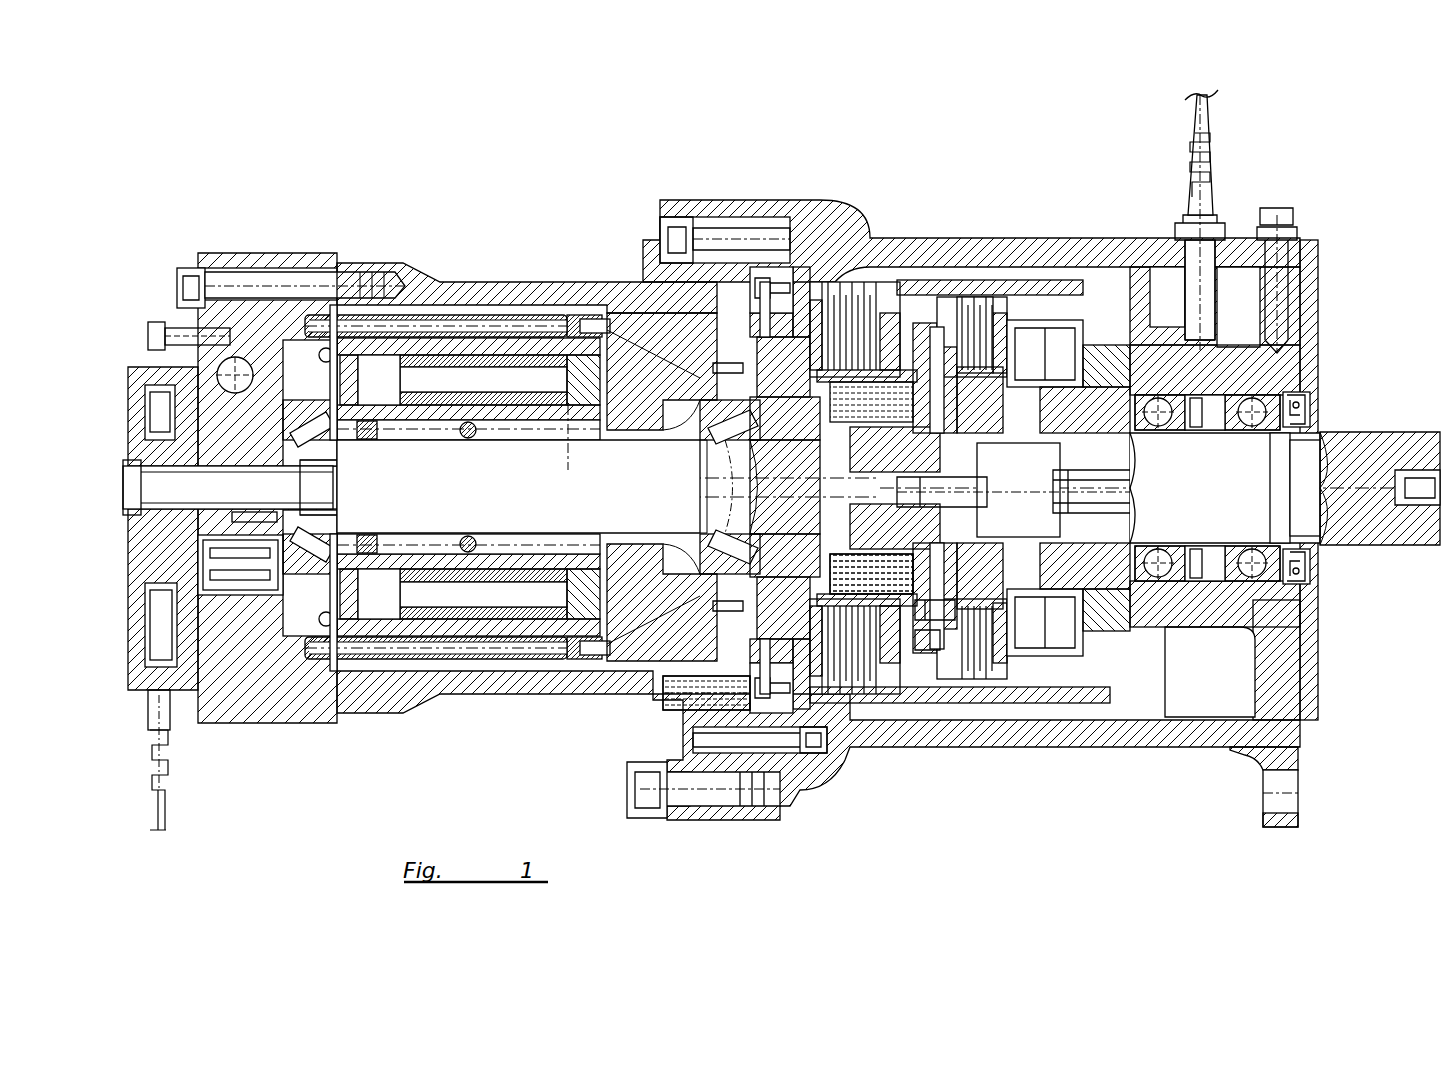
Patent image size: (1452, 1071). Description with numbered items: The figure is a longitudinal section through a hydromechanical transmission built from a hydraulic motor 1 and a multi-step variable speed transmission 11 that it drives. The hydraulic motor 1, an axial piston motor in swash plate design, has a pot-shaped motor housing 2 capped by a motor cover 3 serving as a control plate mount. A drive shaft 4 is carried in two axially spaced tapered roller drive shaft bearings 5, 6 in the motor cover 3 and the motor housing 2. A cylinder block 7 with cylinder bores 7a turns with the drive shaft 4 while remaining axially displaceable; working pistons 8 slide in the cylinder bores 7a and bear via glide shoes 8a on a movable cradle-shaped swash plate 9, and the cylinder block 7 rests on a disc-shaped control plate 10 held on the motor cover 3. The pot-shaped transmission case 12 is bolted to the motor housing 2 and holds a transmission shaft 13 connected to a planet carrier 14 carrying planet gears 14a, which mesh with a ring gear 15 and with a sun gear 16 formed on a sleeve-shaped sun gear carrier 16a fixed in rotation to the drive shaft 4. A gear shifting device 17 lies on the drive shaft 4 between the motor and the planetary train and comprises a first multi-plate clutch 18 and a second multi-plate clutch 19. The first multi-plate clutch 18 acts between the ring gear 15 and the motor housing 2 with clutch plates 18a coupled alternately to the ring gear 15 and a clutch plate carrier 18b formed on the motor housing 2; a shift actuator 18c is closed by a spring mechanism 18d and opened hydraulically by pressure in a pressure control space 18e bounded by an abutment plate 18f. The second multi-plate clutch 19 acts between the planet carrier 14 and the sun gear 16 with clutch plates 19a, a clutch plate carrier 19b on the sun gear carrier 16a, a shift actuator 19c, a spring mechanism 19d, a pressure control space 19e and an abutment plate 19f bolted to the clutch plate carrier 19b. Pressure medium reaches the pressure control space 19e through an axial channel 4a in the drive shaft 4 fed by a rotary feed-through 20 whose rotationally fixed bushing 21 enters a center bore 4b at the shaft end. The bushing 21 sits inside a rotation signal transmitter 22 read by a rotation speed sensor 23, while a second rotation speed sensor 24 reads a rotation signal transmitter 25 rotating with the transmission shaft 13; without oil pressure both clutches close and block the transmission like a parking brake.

The hydraulic motor 1 is at (513, 125).
The motor housing 2 is at (503, 295).
The motor cover 3 is at (225, 265).
The drive shaft 4 is at (630, 470).
The axial channel 4a is at (358, 490).
The center bore 4b is at (330, 498).
The drive shaft bearing 5 is at (302, 420).
The drive shaft bearing 6 is at (722, 415).
The cylinder block 7 is at (387, 347).
The cylinder bores 7a is at (396, 386).
The working pistons 8 is at (440, 360).
The glide shoes 8a is at (587, 375).
The swash plate 9 is at (632, 375).
The control plate 10 is at (330, 350).
The multi-step variable speed transmission 11 is at (1035, 135).
The transmission case 12 is at (1130, 258).
The transmission shaft 13 is at (1237, 479).
The planet carrier 14 is at (1158, 410).
The planet gears 14a is at (1160, 330).
The ring gear 15 is at (1065, 320).
The sun gear 16 is at (1296, 412).
The sun gear carrier 16a is at (1000, 435).
The gear shifting device 17 is at (922, 240).
The first multi-plate clutch 18 is at (847, 255).
The clutch plates 18a is at (856, 310).
The clutch plate carrier 18b is at (830, 625).
The shift actuator 18c is at (740, 296).
The spring mechanism 18d is at (700, 705).
The pressure control space 18e is at (775, 300).
The abutment plate 18f is at (803, 263).
The second multi-plate clutch 19 is at (972, 280).
The clutch plates 19a is at (978, 335).
The clutch plate carrier 19b is at (985, 598).
The shift actuator 19c is at (930, 620).
The spring mechanism 19d is at (878, 600).
The pressure control space 19e is at (937, 385).
The abutment plate 19f is at (945, 635).
The rotary feed-through 20 is at (262, 530).
The bushing 21 is at (292, 520).
The rotation signal transmitter 22 is at (165, 397).
The rotation speed sensor 23 is at (158, 658).
The rotation speed sensor 24 is at (1205, 295).
The rotation signal transmitter 25 is at (1110, 403).